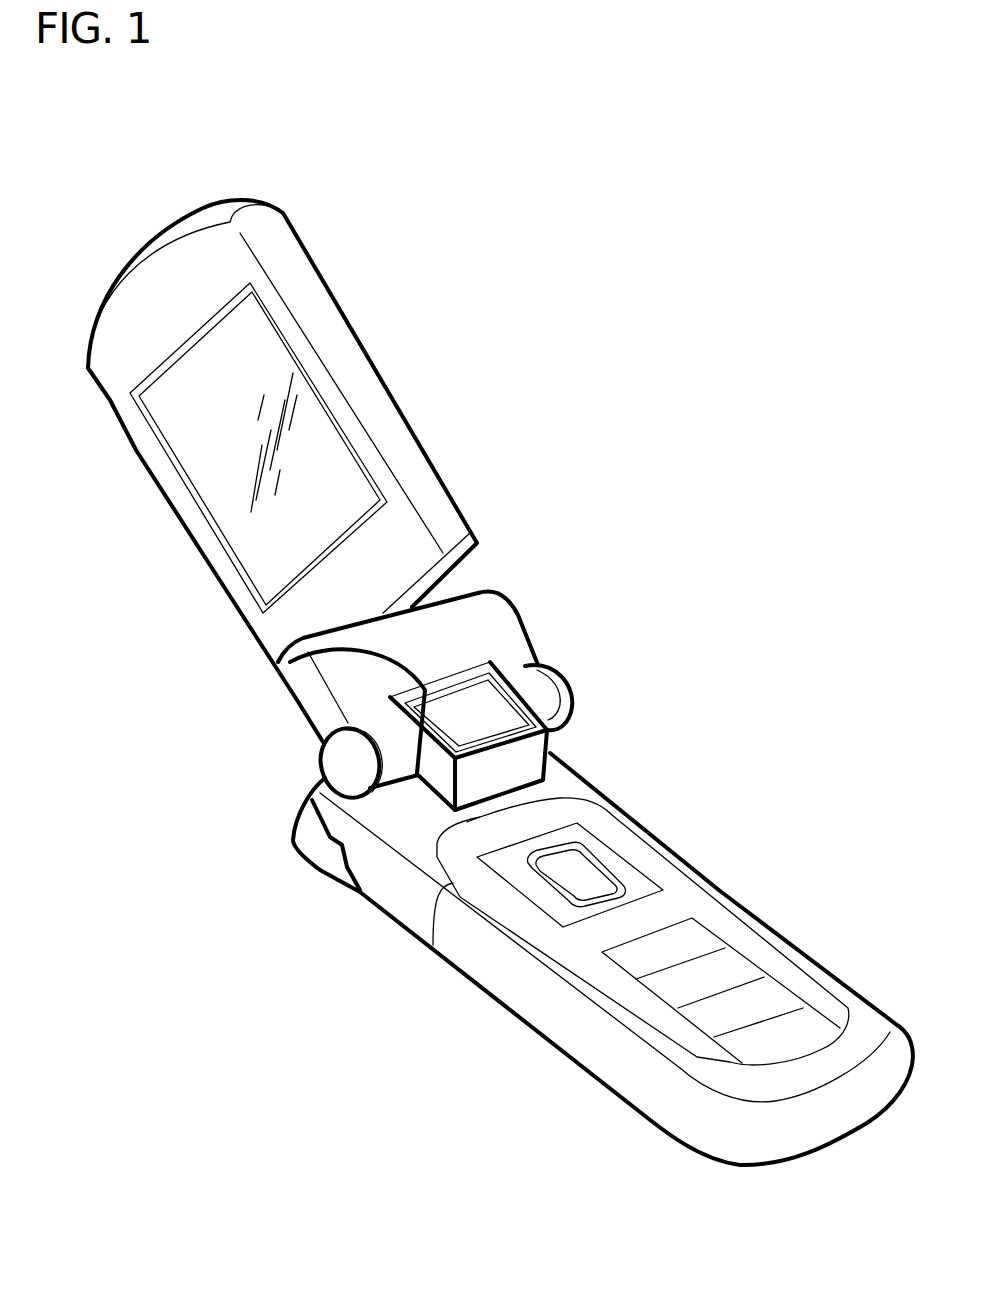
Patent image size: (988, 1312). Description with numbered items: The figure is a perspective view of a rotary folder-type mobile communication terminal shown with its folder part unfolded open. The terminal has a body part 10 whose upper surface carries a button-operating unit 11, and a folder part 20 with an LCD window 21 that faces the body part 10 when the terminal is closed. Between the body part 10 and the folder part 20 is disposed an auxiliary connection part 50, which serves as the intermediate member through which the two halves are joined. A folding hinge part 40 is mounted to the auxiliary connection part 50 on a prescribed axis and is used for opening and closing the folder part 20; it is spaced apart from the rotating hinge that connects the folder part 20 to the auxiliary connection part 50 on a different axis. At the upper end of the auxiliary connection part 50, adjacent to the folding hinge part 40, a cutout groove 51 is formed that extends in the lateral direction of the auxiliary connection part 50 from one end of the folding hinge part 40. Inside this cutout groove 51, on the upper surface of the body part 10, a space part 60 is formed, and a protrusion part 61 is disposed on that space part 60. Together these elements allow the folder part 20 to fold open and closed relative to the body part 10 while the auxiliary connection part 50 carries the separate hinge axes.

The body part 10 is at (645, 827).
The button-operating unit 11 is at (712, 930).
The folder part 20 is at (423, 448).
The LCD window 21 is at (193, 470).
The folding hinge part 40 is at (350, 762).
The auxiliary connection part 50 is at (440, 620).
The cutout groove 51 is at (330, 660).
The space part 60 is at (520, 793).
The protrusion part 61 is at (483, 707).